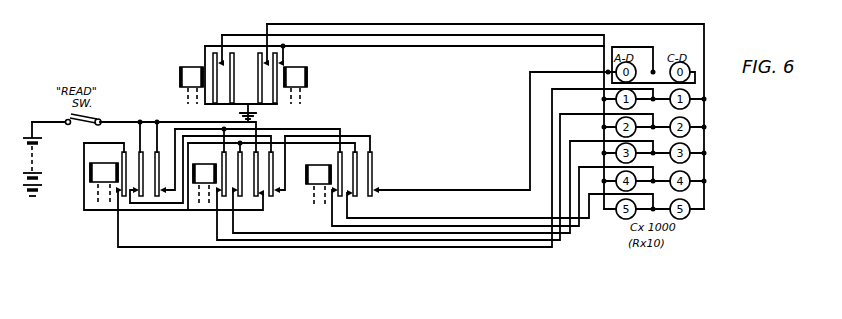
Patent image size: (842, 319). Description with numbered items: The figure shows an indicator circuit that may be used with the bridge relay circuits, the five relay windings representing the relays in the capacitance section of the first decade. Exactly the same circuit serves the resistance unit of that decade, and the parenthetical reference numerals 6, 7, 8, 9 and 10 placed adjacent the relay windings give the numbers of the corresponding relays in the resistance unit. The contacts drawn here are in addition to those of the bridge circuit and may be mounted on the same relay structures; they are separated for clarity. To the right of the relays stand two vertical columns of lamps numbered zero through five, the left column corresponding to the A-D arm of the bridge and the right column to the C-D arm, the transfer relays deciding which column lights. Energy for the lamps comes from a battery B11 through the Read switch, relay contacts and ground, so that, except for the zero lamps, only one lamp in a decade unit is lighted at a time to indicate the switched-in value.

The resistance unit relay number 6 is at (199, 78).
The resistance unit relay number 7 is at (288, 78).
The resistance unit relay number 8 is at (339, 177).
The resistance unit relay number 9 is at (233, 177).
The resistance unit relay number 10 is at (124, 177).
The battery B11 is at (41, 177).